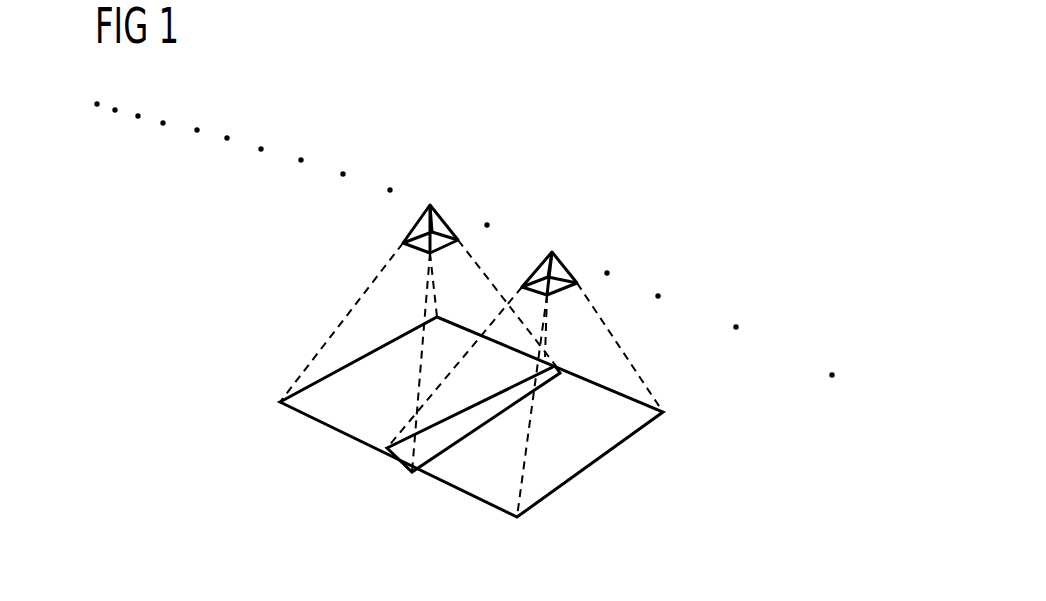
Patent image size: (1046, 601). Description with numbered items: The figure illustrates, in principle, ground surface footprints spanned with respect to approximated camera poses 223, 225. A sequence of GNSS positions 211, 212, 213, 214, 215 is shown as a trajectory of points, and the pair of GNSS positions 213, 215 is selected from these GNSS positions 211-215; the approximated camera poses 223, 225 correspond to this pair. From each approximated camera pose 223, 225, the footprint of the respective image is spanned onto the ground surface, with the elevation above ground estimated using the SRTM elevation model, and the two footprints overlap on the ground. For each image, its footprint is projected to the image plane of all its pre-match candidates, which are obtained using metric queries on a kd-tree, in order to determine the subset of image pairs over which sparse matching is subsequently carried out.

The GNSS position 211 is at (345, 130).
The GNSS position 212 is at (393, 156).
The GNSS position 213 is at (436, 168).
The GNSS position 214 is at (497, 185).
The GNSS position 215 is at (555, 215).
The approximated camera pose 223 is at (368, 229).
The approximated camera pose 225 is at (627, 293).